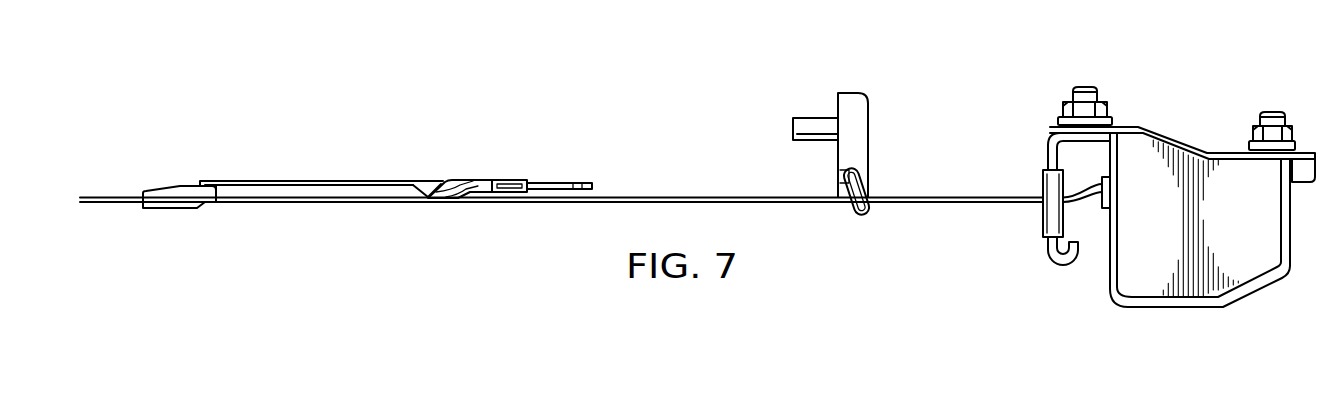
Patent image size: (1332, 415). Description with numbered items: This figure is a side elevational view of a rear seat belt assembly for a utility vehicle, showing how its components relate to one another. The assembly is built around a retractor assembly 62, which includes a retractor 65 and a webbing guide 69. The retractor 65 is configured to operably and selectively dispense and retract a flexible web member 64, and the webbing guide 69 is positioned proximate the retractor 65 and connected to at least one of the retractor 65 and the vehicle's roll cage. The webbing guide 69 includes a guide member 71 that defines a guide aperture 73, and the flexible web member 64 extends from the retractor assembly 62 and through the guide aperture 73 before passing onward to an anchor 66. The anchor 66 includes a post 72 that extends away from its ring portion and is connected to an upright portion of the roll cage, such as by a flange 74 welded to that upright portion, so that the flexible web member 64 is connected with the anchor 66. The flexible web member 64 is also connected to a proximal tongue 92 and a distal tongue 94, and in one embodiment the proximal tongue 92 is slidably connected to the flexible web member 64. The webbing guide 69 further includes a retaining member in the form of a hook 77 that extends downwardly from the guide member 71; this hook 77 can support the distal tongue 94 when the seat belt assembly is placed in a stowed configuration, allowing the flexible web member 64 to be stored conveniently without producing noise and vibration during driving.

The retractor assembly 62 is at (1182, 162).
The flexible web member 64 is at (716, 188).
The retractor 65 is at (1155, 116).
The anchor 66 is at (855, 75).
The webbing guide 69 is at (1040, 150).
The guide member 71 is at (1040, 228).
The post 72 is at (812, 117).
The guide aperture 73 is at (1040, 212).
The flange 74 is at (865, 218).
The hook 77 is at (1064, 265).
The proximal tongue 92 is at (163, 197).
The distal tongue 94 is at (462, 182).